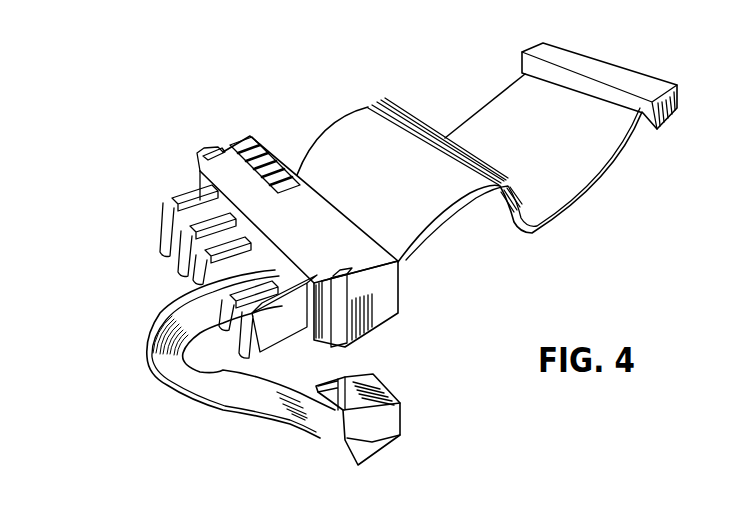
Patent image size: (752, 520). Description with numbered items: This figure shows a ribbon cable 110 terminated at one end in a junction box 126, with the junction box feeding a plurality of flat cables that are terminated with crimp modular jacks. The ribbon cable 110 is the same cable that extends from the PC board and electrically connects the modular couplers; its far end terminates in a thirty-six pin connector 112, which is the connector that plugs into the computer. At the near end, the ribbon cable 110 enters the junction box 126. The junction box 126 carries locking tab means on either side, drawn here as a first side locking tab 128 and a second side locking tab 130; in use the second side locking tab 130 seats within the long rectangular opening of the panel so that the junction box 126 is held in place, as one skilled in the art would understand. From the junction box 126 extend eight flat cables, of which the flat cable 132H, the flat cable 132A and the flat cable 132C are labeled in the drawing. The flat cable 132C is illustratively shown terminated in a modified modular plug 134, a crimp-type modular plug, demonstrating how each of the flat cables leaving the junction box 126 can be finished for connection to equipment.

The ribbon cable 110 is at (367, 118).
The thirty-six pin connector 112 is at (605, 70).
The junction box 126 is at (228, 146).
The first side locking tab 128 is at (378, 313).
The second side locking tab 130 is at (216, 150).
The flat cable 132H is at (180, 192).
The flat cable 132A is at (268, 338).
The flat cable 132C is at (163, 358).
The modified modular plug 134 is at (380, 427).